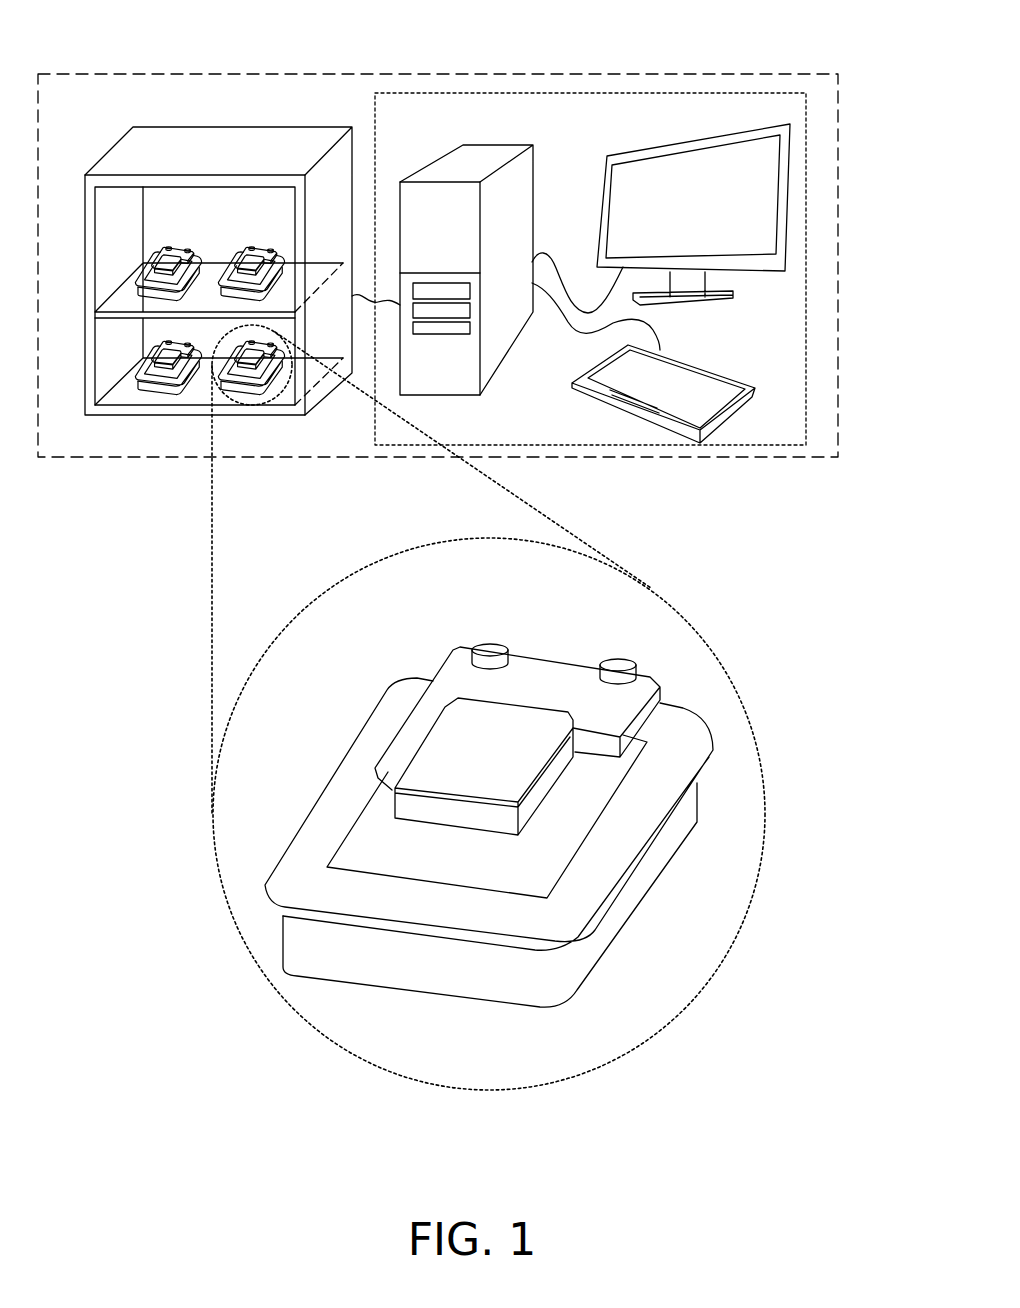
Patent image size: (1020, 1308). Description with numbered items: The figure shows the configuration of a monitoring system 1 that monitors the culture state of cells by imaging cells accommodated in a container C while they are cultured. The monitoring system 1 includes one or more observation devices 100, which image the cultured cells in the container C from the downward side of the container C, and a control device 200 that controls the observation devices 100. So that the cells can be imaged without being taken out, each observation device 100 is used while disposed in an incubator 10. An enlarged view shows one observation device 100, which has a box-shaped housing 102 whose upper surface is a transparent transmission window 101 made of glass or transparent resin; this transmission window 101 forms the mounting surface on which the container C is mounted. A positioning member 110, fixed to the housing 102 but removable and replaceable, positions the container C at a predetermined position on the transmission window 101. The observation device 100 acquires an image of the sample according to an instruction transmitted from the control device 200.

The monitoring system 1 is at (257, 70).
The incubator 10 is at (255, 119).
The observation device 100 is at (462, 600).
The control device 200 is at (805, 258).
The positioning member 110 is at (523, 685).
The transmission window 101 is at (367, 838).
The housing 102 is at (318, 945).
The container C is at (462, 742).